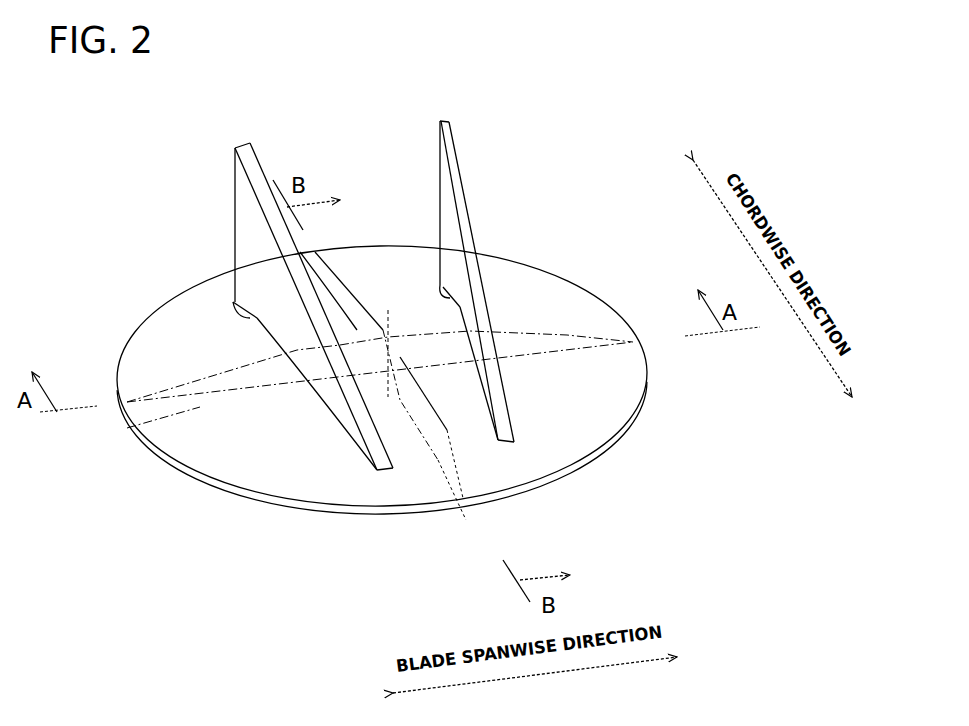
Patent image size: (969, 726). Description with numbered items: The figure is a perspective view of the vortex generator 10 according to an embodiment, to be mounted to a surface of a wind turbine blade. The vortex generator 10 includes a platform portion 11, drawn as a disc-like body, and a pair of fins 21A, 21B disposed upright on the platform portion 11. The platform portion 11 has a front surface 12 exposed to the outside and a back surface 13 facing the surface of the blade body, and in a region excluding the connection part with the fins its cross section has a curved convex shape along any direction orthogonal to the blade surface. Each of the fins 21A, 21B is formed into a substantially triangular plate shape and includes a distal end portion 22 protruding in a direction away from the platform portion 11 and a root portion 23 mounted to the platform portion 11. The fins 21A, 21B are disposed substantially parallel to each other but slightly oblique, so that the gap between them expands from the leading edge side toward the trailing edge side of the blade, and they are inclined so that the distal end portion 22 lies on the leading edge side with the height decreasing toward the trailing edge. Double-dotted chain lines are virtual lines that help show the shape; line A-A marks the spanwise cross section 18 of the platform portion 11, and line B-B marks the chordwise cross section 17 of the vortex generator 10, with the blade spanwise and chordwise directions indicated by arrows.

The vortex generator 10 is at (140, 207).
The platform portion 11 is at (537, 281).
The front surface 12 is at (567, 311).
The back surface 13 is at (613, 390).
The cross section 17 is at (466, 520).
The cross section 18 is at (127, 428).
The fin 21A is at (247, 140).
The fin 21B is at (442, 120).
The distal end portion 22 is at (245, 143).
The root portion 23 is at (243, 317).